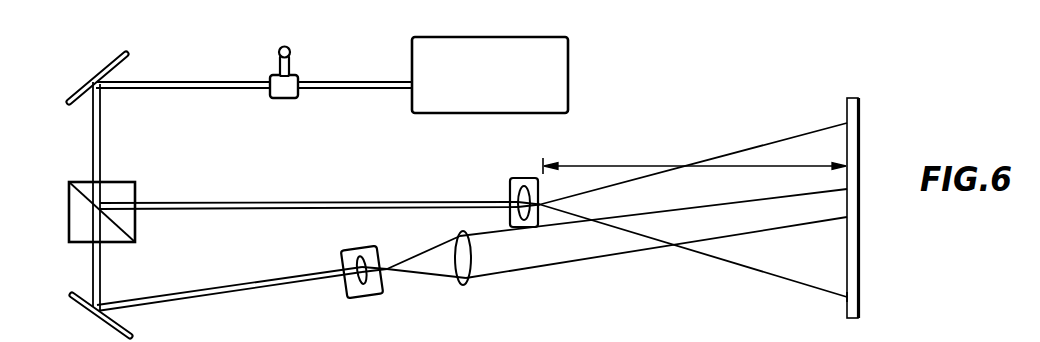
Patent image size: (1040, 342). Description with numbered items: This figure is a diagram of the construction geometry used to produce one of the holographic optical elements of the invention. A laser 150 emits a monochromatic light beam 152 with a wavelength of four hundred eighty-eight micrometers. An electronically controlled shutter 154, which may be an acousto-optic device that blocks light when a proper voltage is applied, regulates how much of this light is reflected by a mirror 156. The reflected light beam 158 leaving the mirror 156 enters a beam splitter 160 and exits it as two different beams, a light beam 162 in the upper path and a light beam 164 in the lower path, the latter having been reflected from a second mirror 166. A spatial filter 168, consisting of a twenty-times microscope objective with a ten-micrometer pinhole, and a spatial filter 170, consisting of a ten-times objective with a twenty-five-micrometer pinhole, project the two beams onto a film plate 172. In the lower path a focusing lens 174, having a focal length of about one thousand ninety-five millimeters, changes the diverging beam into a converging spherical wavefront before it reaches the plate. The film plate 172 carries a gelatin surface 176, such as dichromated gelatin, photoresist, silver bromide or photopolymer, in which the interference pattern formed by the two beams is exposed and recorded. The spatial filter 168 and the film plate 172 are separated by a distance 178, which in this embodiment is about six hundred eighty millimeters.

The laser 150 is at (570, 78).
The monochromatic light beam 152 is at (383, 61).
The electronically controlled shutter 154 is at (296, 73).
The mirror 156 is at (108, 58).
The reflected light beam 158 is at (101, 146).
The beam splitter 160 is at (136, 190).
The light beam 162 is at (247, 203).
The light beam 164 is at (191, 293).
The mirror 166 is at (131, 332).
The spatial filter 168 is at (513, 177).
The spatial filter 170 is at (375, 297).
The film plate 172 is at (855, 96).
The focusing lens 174 is at (469, 284).
The gelatin surface 176 is at (846, 313).
The distance 178 is at (623, 166).